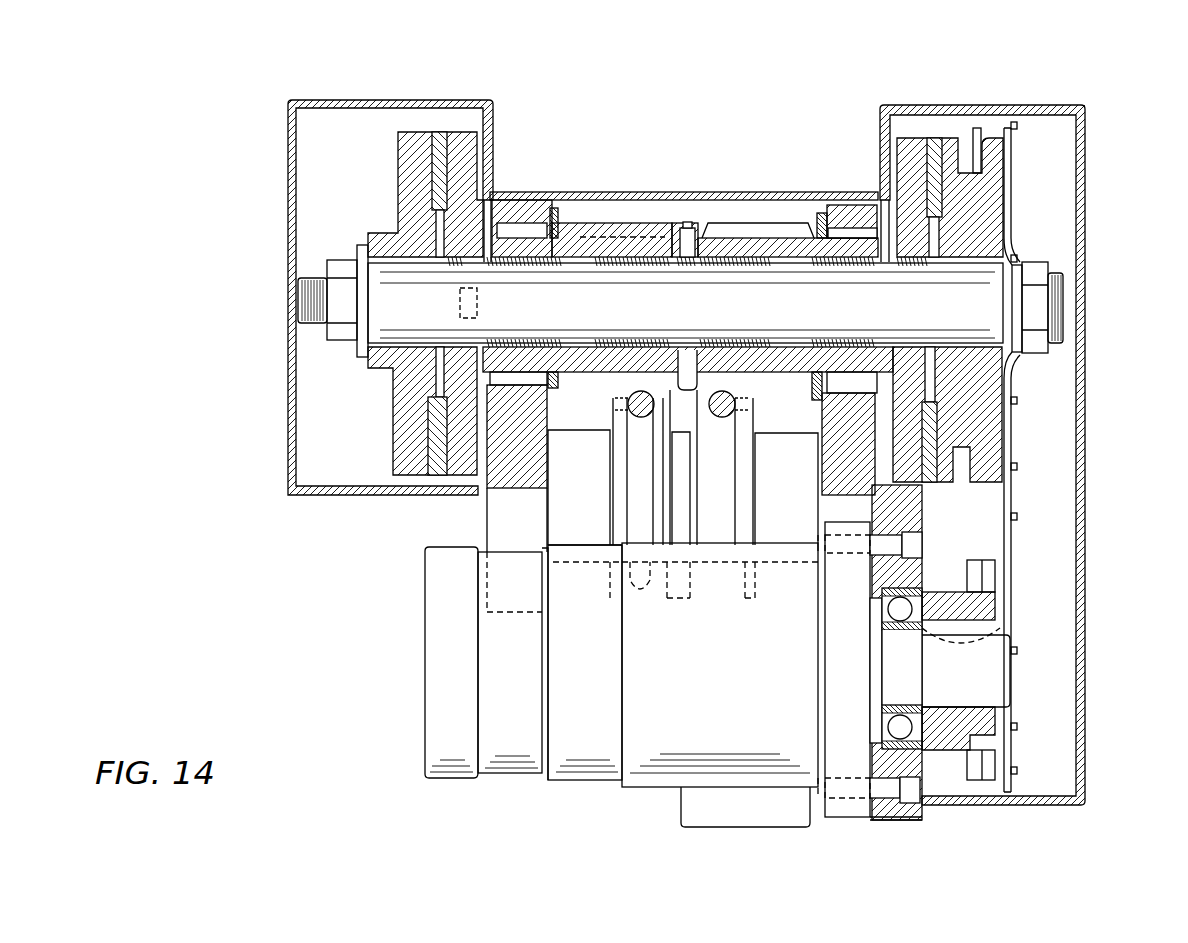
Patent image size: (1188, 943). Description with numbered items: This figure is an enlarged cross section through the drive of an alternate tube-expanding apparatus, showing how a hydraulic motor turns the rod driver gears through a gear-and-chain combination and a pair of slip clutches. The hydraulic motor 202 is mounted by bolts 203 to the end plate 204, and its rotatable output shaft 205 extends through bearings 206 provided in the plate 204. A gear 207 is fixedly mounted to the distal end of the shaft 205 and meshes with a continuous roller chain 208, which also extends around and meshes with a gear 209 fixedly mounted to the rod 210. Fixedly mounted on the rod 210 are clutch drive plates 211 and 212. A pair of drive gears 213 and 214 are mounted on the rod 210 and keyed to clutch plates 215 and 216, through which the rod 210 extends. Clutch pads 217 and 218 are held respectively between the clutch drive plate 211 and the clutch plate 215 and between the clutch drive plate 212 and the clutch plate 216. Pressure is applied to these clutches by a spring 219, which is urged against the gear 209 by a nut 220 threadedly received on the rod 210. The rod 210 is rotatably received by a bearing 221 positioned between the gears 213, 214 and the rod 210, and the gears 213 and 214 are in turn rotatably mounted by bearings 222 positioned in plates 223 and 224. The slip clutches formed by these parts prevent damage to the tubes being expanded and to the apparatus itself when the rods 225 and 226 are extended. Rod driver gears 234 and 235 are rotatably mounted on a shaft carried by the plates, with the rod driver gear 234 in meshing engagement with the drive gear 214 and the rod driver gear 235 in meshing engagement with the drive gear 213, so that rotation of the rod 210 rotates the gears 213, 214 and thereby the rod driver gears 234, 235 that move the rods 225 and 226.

The hydraulic motor 202 is at (440, 662).
The bolts 203 is at (913, 548).
The end plate 204 is at (922, 818).
The rotatable output shaft 205 is at (997, 662).
The bearings 206 is at (887, 617).
The gear 207 is at (982, 732).
The continuous roller chain 208 is at (1008, 515).
The gear 209 is at (977, 422).
The rod 210 is at (965, 318).
The clutch drive plate 211 is at (398, 150).
The clutch drive plate 212 is at (957, 143).
The drive gear 213 is at (620, 225).
The drive gear 214 is at (747, 223).
The clutch plate 215 is at (470, 147).
The clutch plate 216 is at (897, 157).
The clutch pad 217 is at (441, 130).
The clutch pad 218 is at (932, 138).
The spring 219 is at (1018, 247).
The nut 220 is at (1038, 348).
The bearing 221 is at (543, 262).
The bearings 222 is at (513, 232).
The plate 223 is at (497, 478).
The plate 224 is at (833, 518).
The rod 225 is at (640, 415).
The rod 226 is at (723, 412).
The rod driver gear 234 is at (737, 390).
The rod driver gear 235 is at (623, 393).